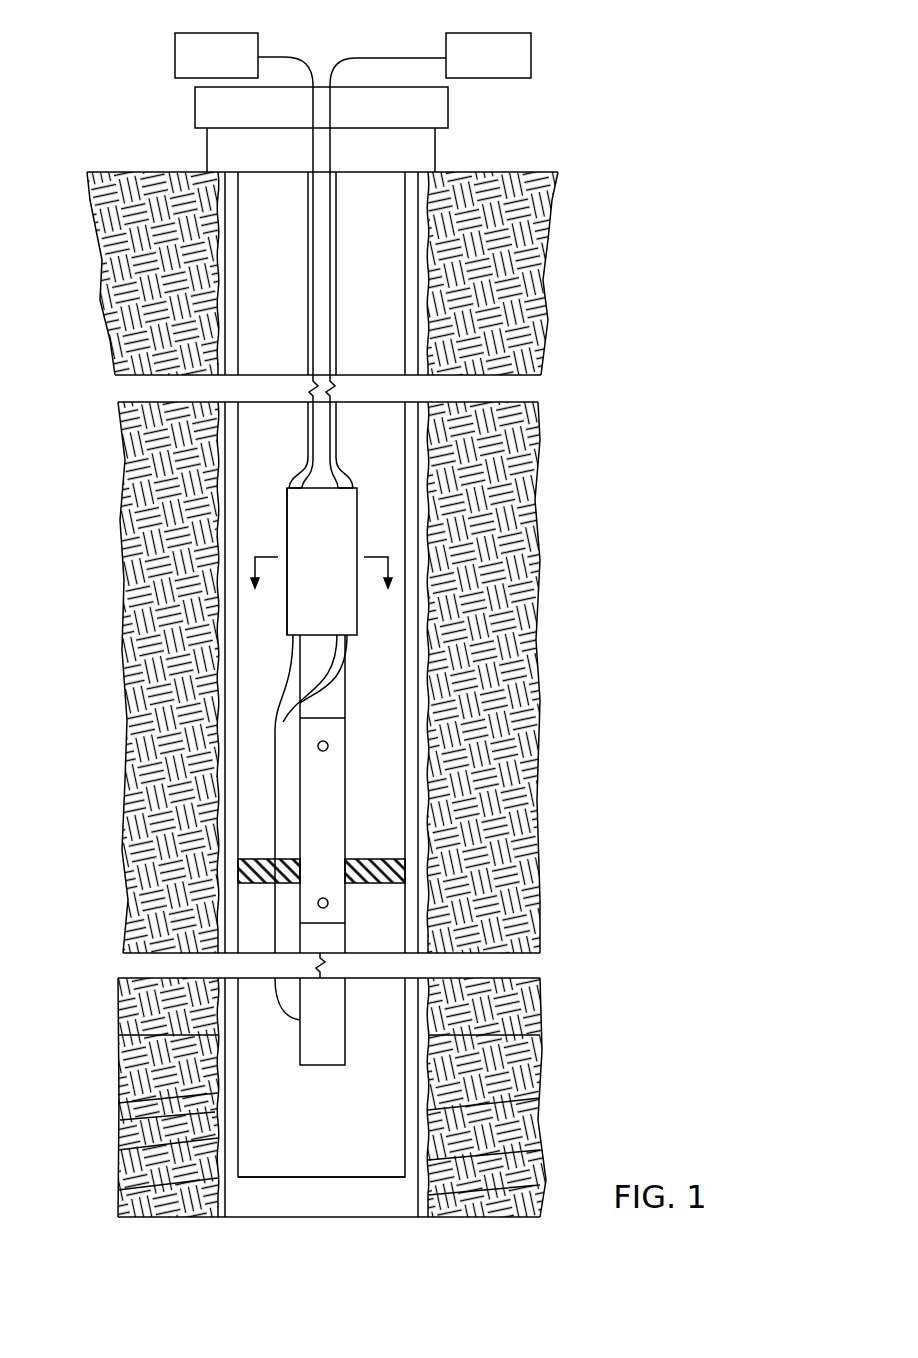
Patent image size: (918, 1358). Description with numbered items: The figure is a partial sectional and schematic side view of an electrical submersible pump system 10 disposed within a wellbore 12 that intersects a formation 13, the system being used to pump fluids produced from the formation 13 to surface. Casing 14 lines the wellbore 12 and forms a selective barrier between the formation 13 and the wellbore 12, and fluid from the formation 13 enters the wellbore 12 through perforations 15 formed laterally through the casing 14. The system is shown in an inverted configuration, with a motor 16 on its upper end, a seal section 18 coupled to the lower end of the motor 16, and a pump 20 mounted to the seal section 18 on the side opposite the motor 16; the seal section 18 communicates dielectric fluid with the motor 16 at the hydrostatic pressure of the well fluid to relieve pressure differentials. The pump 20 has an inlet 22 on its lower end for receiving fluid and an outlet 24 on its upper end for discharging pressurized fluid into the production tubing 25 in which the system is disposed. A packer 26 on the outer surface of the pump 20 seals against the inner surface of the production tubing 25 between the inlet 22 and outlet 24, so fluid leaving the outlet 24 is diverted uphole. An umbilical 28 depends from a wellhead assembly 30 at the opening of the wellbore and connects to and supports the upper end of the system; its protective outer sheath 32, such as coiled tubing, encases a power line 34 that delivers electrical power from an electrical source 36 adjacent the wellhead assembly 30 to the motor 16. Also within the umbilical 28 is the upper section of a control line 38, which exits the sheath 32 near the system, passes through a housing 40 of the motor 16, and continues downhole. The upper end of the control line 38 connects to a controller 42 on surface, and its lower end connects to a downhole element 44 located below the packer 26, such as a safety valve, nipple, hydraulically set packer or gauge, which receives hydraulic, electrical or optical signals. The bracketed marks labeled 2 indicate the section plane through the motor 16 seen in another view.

The electrical submersible pump system 10 is at (287, 468).
The wellbore 12 is at (366, 1206).
The formation 13 is at (508, 1115).
The casing 14 is at (405, 333).
The perforations 15 is at (195, 1088).
The motor 16 is at (360, 533).
The seal section 18 is at (345, 690).
The pump 20 is at (345, 807).
The inlet 22 is at (329, 903).
The outlet 24 is at (329, 746).
The production tubing 25 is at (410, 245).
The packer 26 is at (382, 858).
The umbilical 28 is at (345, 441).
The wellhead assembly 30 is at (448, 102).
The protective outer sheath 32 is at (350, 463).
The power line 34 is at (288, 54).
The electrical source 36 is at (175, 56).
The control line 38 is at (378, 55).
The housing 40 is at (287, 522).
The controller 42 is at (531, 58).
The downhole element 44 is at (337, 1020).
The section line 2 is at (323, 591).